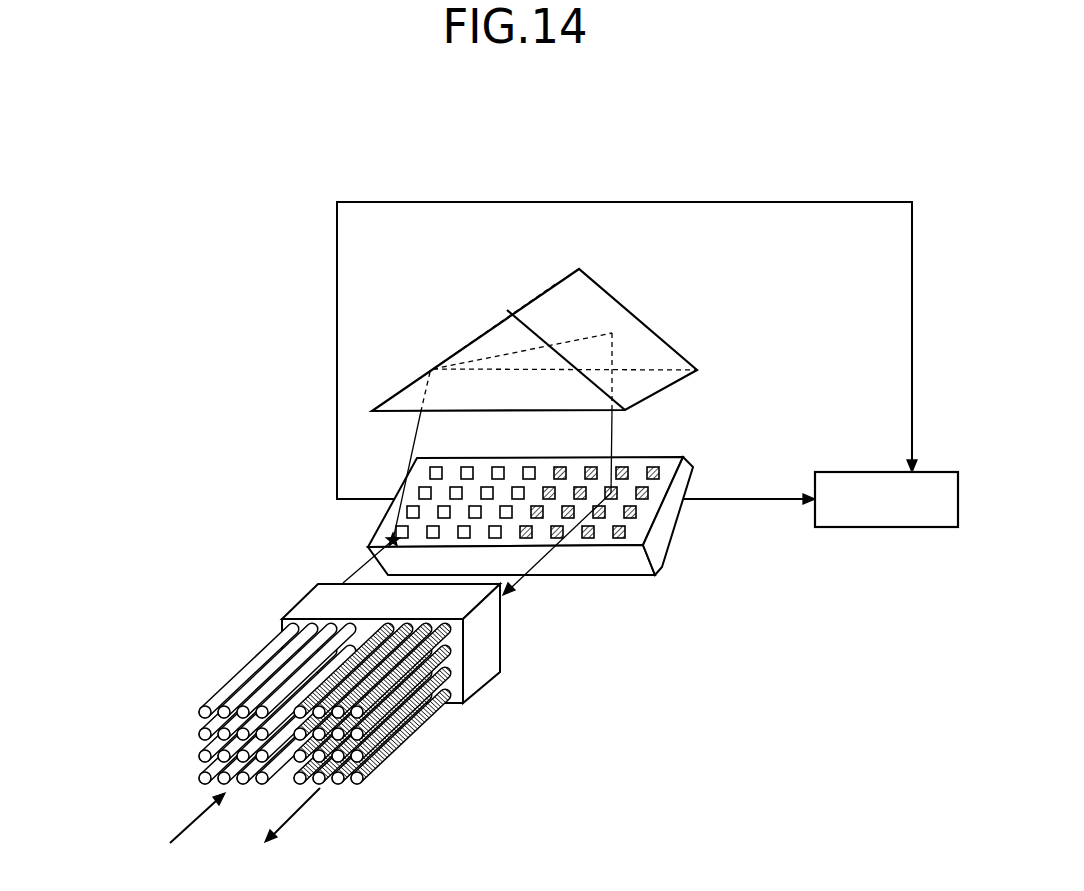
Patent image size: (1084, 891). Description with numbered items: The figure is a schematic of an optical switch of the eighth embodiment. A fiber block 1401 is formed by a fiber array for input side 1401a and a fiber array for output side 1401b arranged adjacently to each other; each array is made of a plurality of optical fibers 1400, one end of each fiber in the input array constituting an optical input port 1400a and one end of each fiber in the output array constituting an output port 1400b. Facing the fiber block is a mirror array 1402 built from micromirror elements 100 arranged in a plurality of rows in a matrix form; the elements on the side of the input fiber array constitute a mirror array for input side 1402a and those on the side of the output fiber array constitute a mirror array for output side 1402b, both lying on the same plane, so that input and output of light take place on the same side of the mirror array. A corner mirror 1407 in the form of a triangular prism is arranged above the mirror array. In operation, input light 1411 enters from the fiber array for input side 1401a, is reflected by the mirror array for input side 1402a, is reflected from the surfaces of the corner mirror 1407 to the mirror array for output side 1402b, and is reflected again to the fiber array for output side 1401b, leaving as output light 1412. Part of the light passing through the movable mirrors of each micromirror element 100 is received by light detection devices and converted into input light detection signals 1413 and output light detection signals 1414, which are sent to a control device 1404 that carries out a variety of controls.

The micromirror element 100 is at (385, 527).
The optical fiber 1400 is at (320, 707).
The optical input port 1400a is at (203, 733).
The output port 1400b is at (360, 782).
The fiber block 1401 is at (480, 677).
The fiber array for input side 1401a is at (243, 659).
The fiber array for output side 1401b is at (420, 748).
The mirror array 1402 is at (565, 496).
The mirror array for input side 1402a is at (428, 455).
The mirror array for output side 1402b is at (552, 455).
The control device 1404 is at (878, 472).
The corner mirror 1407 is at (463, 345).
The input light 1411 is at (133, 816).
The output light 1412 is at (368, 828).
The input light detection signal 1413 is at (697, 202).
The output light detection signal 1414 is at (763, 500).